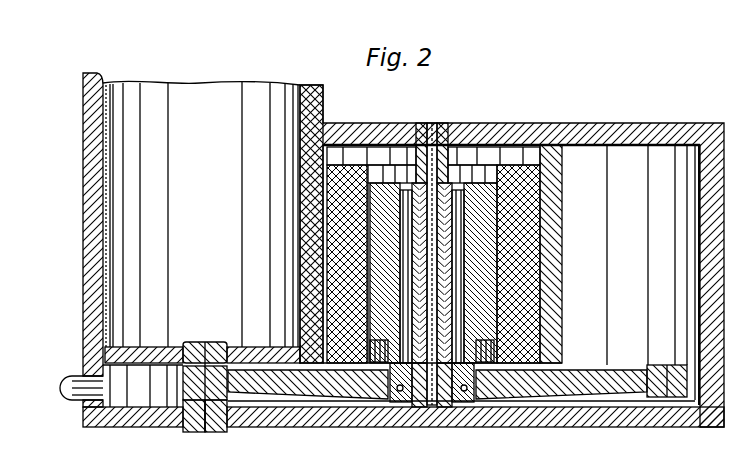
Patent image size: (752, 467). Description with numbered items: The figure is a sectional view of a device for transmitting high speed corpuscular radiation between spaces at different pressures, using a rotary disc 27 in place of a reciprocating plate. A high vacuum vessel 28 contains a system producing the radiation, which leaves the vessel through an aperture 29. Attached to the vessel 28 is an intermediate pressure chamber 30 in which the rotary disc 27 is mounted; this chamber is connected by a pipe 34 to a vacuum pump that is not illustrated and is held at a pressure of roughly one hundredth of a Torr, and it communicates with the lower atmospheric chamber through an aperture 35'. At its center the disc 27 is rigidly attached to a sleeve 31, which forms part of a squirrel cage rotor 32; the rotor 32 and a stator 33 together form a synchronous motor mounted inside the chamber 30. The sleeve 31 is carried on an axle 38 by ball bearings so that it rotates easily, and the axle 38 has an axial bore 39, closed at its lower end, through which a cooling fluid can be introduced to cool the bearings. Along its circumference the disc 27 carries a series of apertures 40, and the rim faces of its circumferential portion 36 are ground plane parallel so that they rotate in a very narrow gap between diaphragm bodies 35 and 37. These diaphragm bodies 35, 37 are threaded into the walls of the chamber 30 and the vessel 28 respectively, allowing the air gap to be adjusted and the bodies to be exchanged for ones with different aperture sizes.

The high vacuum vessel 28 is at (188, 107).
The axial bore 39 is at (433, 122).
The axle 38 is at (449, 122).
The squirrel cage rotor 32 is at (493, 163).
The intermediate pressure chamber 30 is at (617, 132).
The stator 33 is at (542, 232).
The aperture 29 is at (204, 345).
The diaphragm body 37 is at (190, 343).
The apertures 40 is at (183, 386).
The pipe 34 is at (81, 415).
The diaphragm body 35 is at (187, 432).
The aperture 35' is at (223, 432).
The sleeve 31 is at (391, 427).
The rotary disc 27 is at (574, 370).
The circumferential portion 36 is at (648, 365).